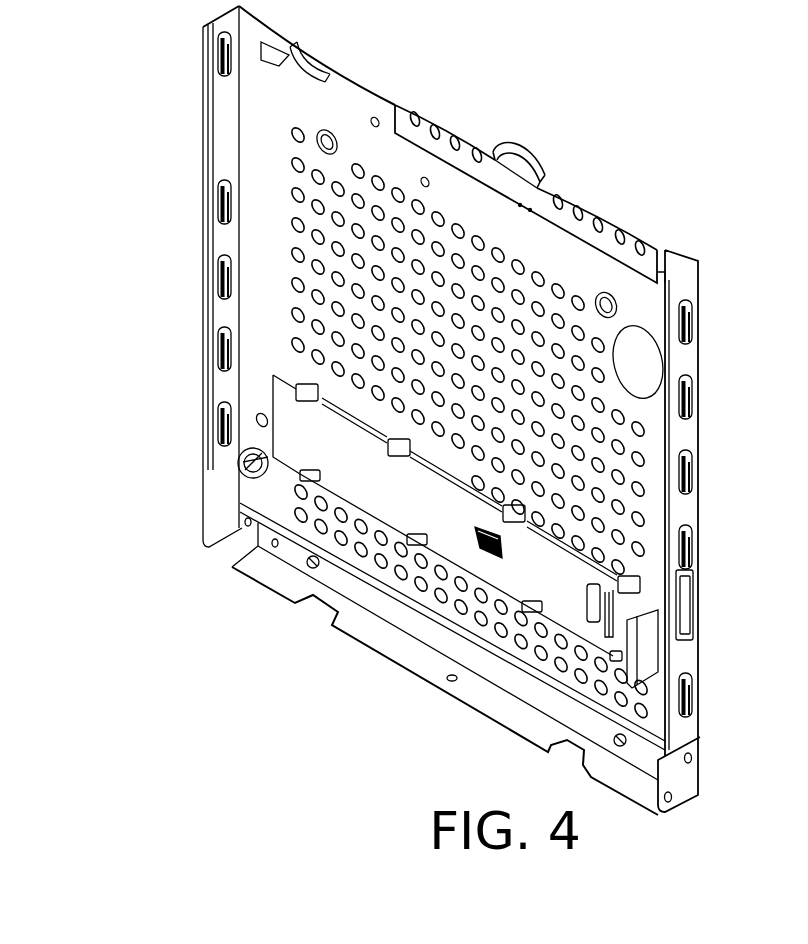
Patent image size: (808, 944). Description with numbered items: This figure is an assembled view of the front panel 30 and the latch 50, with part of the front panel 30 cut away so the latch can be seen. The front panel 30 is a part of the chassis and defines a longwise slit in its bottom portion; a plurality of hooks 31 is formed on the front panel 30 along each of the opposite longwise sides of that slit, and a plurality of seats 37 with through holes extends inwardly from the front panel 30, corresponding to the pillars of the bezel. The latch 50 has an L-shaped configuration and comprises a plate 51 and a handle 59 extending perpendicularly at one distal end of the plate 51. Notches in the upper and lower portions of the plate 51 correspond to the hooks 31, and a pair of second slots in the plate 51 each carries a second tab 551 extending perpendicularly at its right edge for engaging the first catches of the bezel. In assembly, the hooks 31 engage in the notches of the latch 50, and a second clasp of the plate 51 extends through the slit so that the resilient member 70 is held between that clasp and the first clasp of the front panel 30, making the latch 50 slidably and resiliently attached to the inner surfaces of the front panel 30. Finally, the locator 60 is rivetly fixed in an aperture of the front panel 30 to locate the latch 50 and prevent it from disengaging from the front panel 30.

The front panel 30 is at (470, 145).
The latch 50 is at (287, 401).
The locator 60 is at (257, 421).
The seat 37 is at (240, 461).
The plate 51 is at (540, 530).
The hook 31 is at (624, 581).
The second tab 551 is at (642, 597).
The handle 59 is at (643, 660).
The resilient member 70 is at (475, 543).